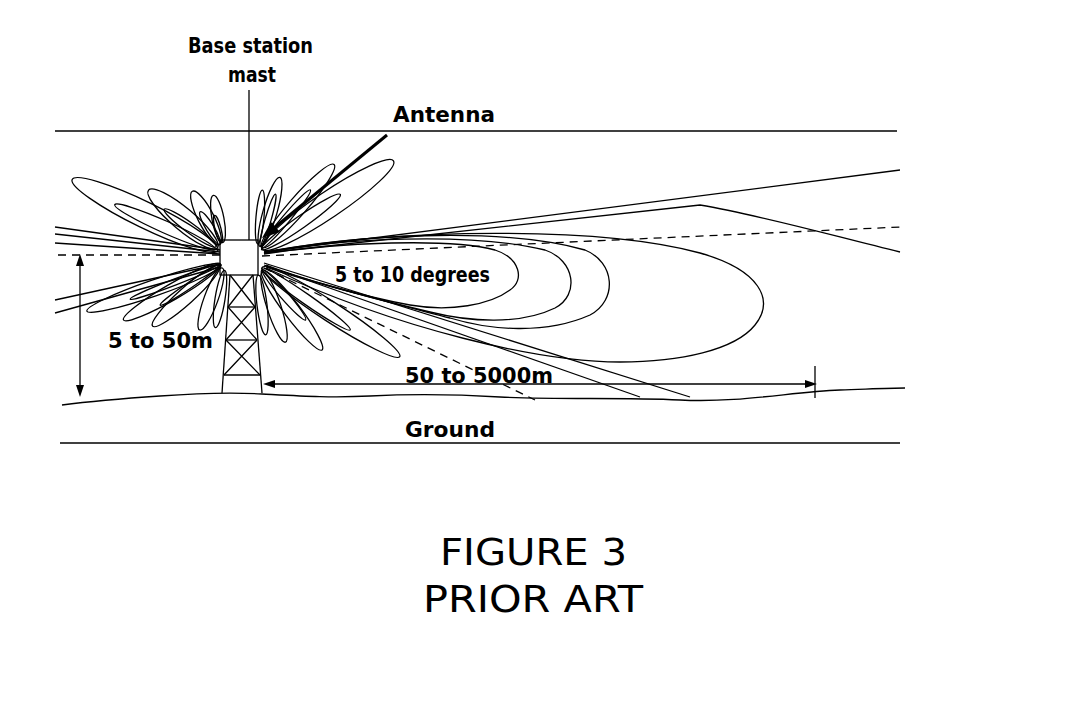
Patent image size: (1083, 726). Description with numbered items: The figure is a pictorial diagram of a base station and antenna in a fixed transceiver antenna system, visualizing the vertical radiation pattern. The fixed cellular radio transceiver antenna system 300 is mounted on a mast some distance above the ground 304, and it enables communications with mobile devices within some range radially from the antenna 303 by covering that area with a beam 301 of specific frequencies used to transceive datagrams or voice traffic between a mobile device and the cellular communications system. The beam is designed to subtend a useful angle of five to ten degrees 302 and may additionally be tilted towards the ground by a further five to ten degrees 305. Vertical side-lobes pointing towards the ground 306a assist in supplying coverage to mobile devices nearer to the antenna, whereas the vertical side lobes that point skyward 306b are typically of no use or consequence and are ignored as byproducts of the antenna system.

The fixed cellular radio transceiver antenna system 300 is at (240, 233).
The beam 301 is at (582, 261).
The beam angle of 5 to 10 degrees 302 is at (468, 255).
The range radially from the antenna 303 is at (575, 392).
The ground 304 is at (130, 352).
The additional 5 to 10 degrees tilt 305 is at (455, 354).
The vertical side-lobes pointing towards the ground 306a is at (310, 345).
The vertical side lobes pointing skyward 306b is at (318, 180).